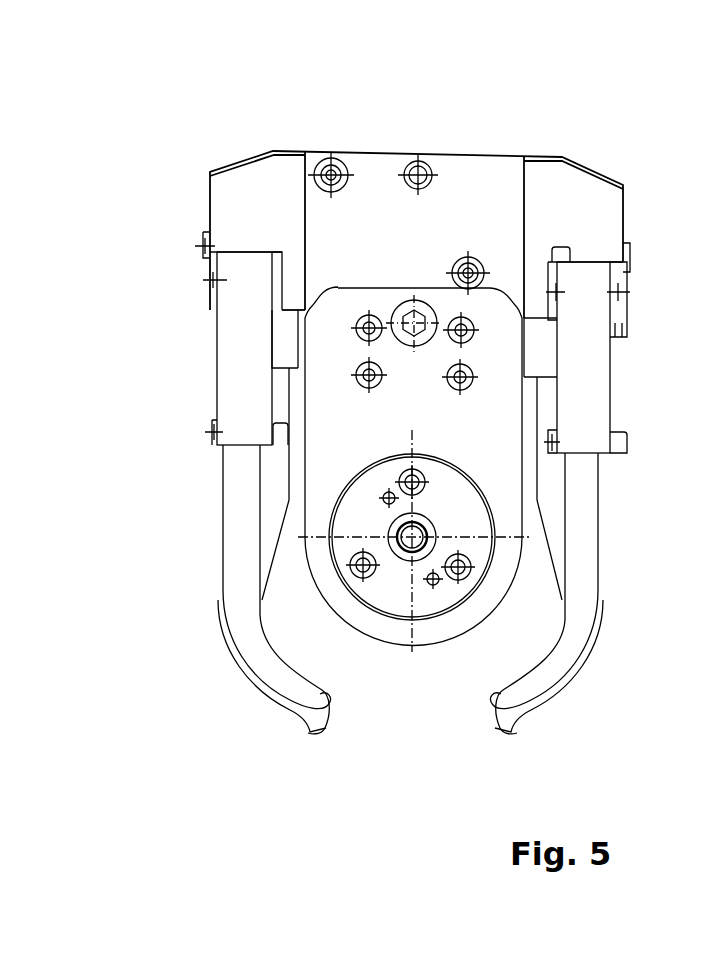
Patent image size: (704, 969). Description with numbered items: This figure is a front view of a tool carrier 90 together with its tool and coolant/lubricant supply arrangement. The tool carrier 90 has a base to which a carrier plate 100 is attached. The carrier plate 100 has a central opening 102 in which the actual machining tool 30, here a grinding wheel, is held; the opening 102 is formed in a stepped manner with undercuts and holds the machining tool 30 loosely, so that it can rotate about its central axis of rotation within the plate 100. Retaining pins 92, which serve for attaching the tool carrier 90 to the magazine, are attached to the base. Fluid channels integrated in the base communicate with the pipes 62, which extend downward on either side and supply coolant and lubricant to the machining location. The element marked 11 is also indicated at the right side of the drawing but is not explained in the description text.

The tool carrier 90 is at (590, 125).
The retaining pins 92 is at (333, 170).
The clamping block 11 is at (614, 421).
The carrier plate 100 is at (343, 407).
The central opening 102 is at (432, 615).
The machining tool 30 is at (385, 580).
The pipes 62 is at (237, 532).